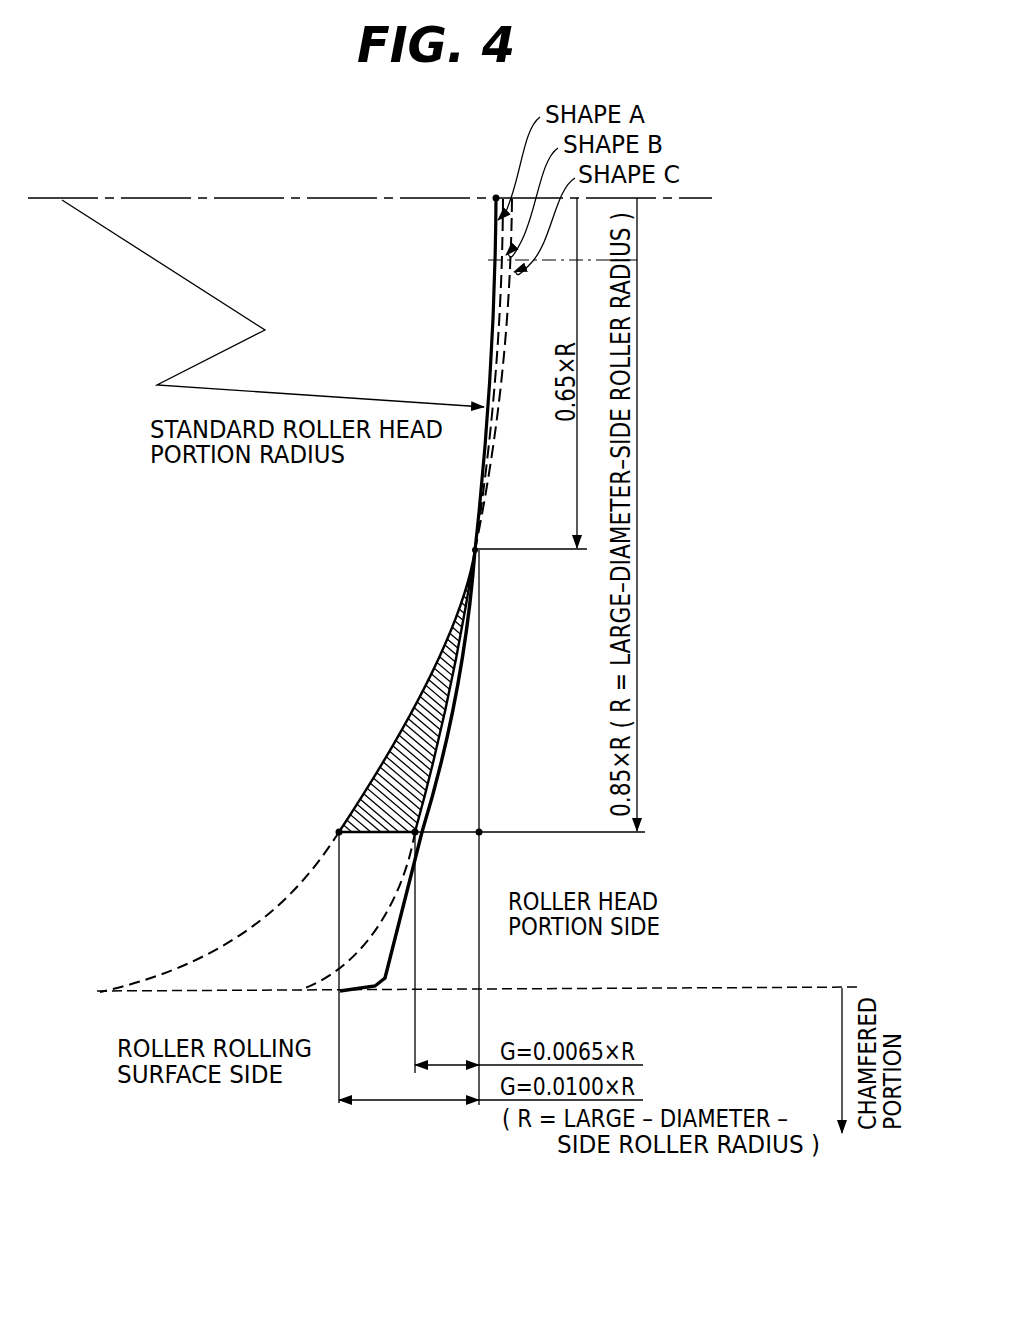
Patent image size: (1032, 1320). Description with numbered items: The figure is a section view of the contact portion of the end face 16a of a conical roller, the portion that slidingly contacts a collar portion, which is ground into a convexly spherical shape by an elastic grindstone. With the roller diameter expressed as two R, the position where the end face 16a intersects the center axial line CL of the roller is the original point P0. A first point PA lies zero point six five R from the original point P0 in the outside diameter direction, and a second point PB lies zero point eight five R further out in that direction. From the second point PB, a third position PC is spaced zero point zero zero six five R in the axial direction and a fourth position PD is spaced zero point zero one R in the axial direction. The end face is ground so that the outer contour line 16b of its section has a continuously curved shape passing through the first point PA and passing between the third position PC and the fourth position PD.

The end face 16a is at (494, 305).
The outer contour line 16b is at (425, 678).
The original point P0 is at (495, 198).
The first point PA is at (480, 552).
The second point PB is at (481, 829).
The third position PC is at (428, 838).
The fourth position PD is at (337, 832).
The center axial line CL is at (316, 196).